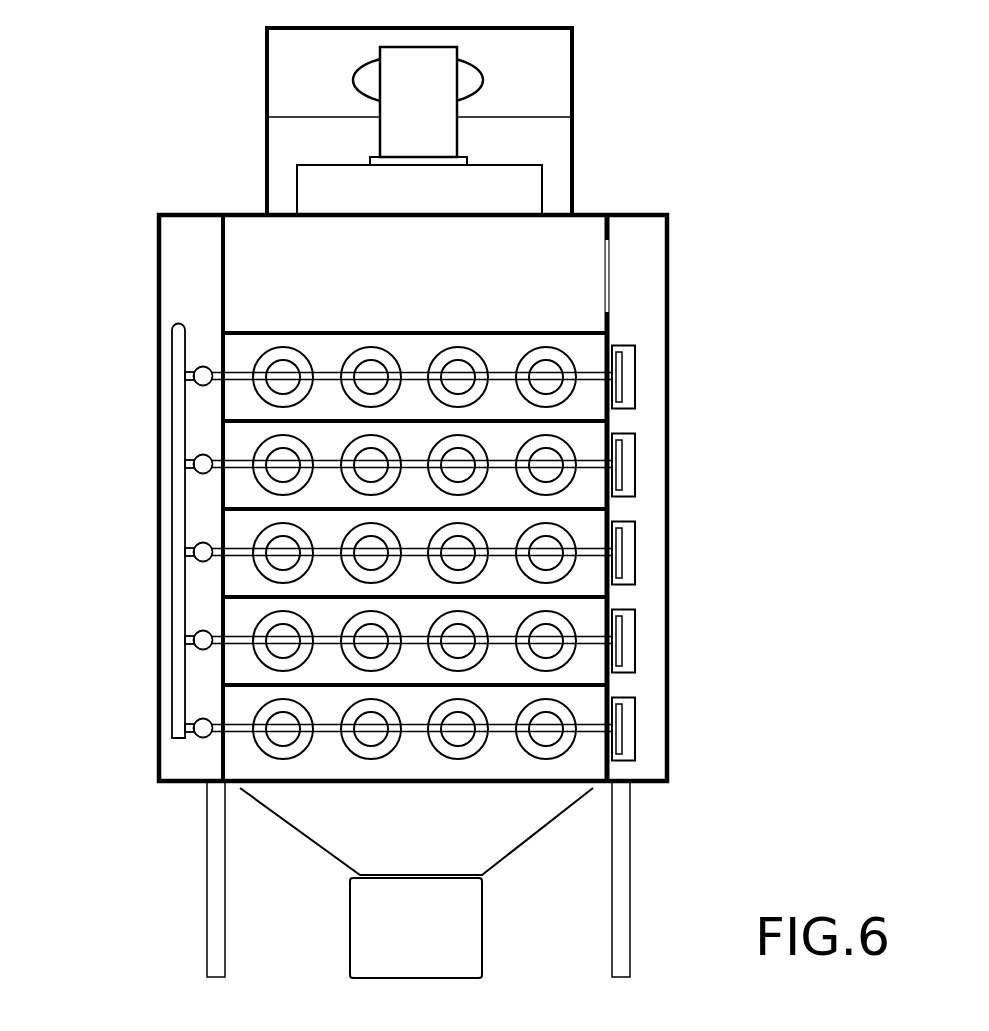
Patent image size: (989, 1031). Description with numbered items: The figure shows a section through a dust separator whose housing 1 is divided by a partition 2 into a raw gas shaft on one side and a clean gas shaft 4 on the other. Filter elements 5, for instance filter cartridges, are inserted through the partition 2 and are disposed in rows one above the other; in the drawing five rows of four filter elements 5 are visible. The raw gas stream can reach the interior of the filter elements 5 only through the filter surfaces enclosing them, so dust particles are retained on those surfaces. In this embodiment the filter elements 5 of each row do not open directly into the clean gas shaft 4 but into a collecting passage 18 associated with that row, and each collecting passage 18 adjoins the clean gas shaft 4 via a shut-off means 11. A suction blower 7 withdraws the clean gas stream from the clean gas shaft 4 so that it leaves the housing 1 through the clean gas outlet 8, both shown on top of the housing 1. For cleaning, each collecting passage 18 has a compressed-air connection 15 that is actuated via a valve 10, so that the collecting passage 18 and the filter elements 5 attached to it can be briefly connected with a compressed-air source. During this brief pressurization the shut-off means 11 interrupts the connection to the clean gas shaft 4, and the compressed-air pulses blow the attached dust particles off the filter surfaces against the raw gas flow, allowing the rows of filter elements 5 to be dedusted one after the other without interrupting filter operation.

The housing 1 is at (678, 485).
The partition 2 is at (583, 587).
The clean gas shaft 4 is at (635, 278).
The filter elements 5 is at (475, 445).
The suction blower 7 is at (497, 185).
The clean gas outlet 8 is at (470, 78).
The valve 10 is at (197, 382).
The shut-off means 11 is at (623, 457).
The compressed-air connection 15 is at (330, 463).
The collecting passages 18 is at (242, 348).